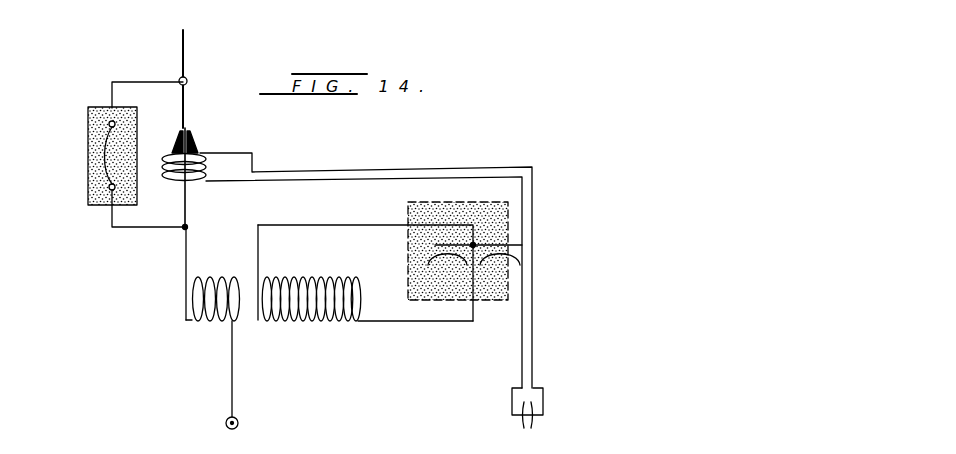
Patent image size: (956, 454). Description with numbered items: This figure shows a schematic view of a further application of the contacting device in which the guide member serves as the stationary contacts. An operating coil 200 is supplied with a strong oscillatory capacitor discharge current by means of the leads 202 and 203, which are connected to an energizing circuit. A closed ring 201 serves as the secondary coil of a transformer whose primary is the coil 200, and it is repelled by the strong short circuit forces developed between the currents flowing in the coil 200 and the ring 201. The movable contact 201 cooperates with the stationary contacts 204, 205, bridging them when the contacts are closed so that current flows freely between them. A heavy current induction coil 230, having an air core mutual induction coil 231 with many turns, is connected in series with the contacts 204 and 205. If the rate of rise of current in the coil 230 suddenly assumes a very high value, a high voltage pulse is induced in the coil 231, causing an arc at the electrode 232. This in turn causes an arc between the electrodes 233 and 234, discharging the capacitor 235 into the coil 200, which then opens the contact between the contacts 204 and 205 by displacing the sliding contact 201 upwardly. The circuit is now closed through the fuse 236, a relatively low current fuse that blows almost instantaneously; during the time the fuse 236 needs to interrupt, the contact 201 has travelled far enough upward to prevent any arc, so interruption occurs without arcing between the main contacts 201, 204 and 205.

The operating coil 200 is at (222, 150).
The closed ring 201 is at (197, 138).
The lead 202 is at (343, 170).
The lead 203 is at (307, 182).
The stationary contact 204 is at (187, 210).
The stationary contact 205 is at (187, 48).
The heavy current induction coil 230 is at (207, 323).
The air core mutual induction coil 231 is at (287, 323).
The electrode 232 is at (477, 317).
The electrode 233 is at (473, 245).
The electrode 234 is at (500, 253).
The capacitor 235 is at (544, 398).
The fuse 236 is at (92, 175).